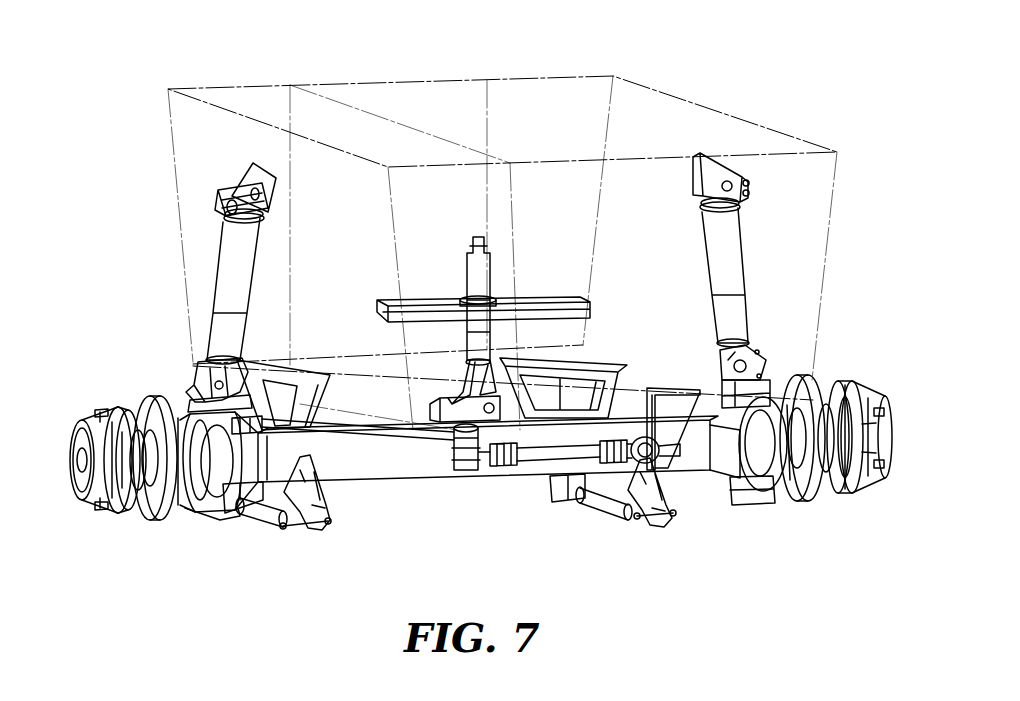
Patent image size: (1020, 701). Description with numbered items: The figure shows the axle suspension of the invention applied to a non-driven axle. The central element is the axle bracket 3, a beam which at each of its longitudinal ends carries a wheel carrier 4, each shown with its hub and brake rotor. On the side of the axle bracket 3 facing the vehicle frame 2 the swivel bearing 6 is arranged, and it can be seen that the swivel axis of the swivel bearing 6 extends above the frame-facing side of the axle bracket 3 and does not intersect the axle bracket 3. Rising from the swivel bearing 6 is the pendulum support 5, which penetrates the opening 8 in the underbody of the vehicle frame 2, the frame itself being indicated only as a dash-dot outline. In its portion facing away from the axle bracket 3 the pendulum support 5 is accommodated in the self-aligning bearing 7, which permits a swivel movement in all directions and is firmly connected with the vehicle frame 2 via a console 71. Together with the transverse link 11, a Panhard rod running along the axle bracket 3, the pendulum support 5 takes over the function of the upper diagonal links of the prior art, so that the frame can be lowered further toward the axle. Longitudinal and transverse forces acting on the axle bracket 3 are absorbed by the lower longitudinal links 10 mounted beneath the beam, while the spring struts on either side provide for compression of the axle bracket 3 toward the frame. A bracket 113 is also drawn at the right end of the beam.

The vehicle frame 2 is at (783, 135).
The axle bracket 3 is at (422, 478).
The wheel carrier 4 is at (106, 388).
The pendulum support 5 is at (490, 278).
The swivel bearing 6 is at (455, 406).
The self-aligning bearing 7 is at (462, 290).
The opening 8 is at (445, 386).
The lower longitudinal link 10 is at (260, 515).
The transverse link 11 is at (530, 462).
The console 71 is at (565, 312).
The bracket 113 is at (670, 425).